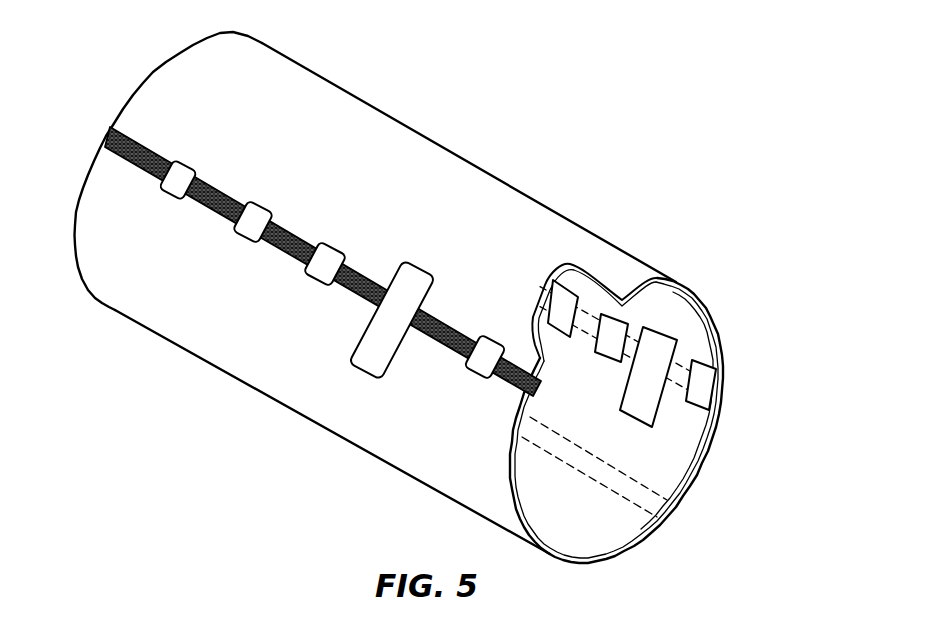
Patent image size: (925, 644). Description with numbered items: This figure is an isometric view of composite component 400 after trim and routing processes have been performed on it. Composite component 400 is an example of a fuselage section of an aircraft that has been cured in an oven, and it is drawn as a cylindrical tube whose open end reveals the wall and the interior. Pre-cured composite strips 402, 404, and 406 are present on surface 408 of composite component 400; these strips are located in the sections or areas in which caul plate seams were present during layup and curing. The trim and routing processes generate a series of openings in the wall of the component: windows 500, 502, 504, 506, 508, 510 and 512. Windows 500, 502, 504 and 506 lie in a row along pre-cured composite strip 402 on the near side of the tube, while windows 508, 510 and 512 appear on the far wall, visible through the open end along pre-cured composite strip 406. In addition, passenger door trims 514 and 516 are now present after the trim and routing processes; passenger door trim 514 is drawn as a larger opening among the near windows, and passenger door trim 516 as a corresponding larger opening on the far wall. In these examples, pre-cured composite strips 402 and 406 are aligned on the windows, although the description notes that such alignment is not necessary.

The composite component 400 is at (503, 152).
The pre-cured composite strip 402 is at (110, 127).
The pre-cured composite strip 404 is at (663, 512).
The pre-cured composite strip 406 is at (723, 400).
The surface 408 is at (210, 48).
The window 500 is at (170, 200).
The window 502 is at (242, 245).
The window 504 is at (317, 283).
The window 506 is at (478, 376).
The window 508 is at (572, 297).
The window 510 is at (612, 362).
The window 512 is at (693, 410).
The passenger door trim 514 is at (372, 382).
The passenger door trim 516 is at (648, 327).